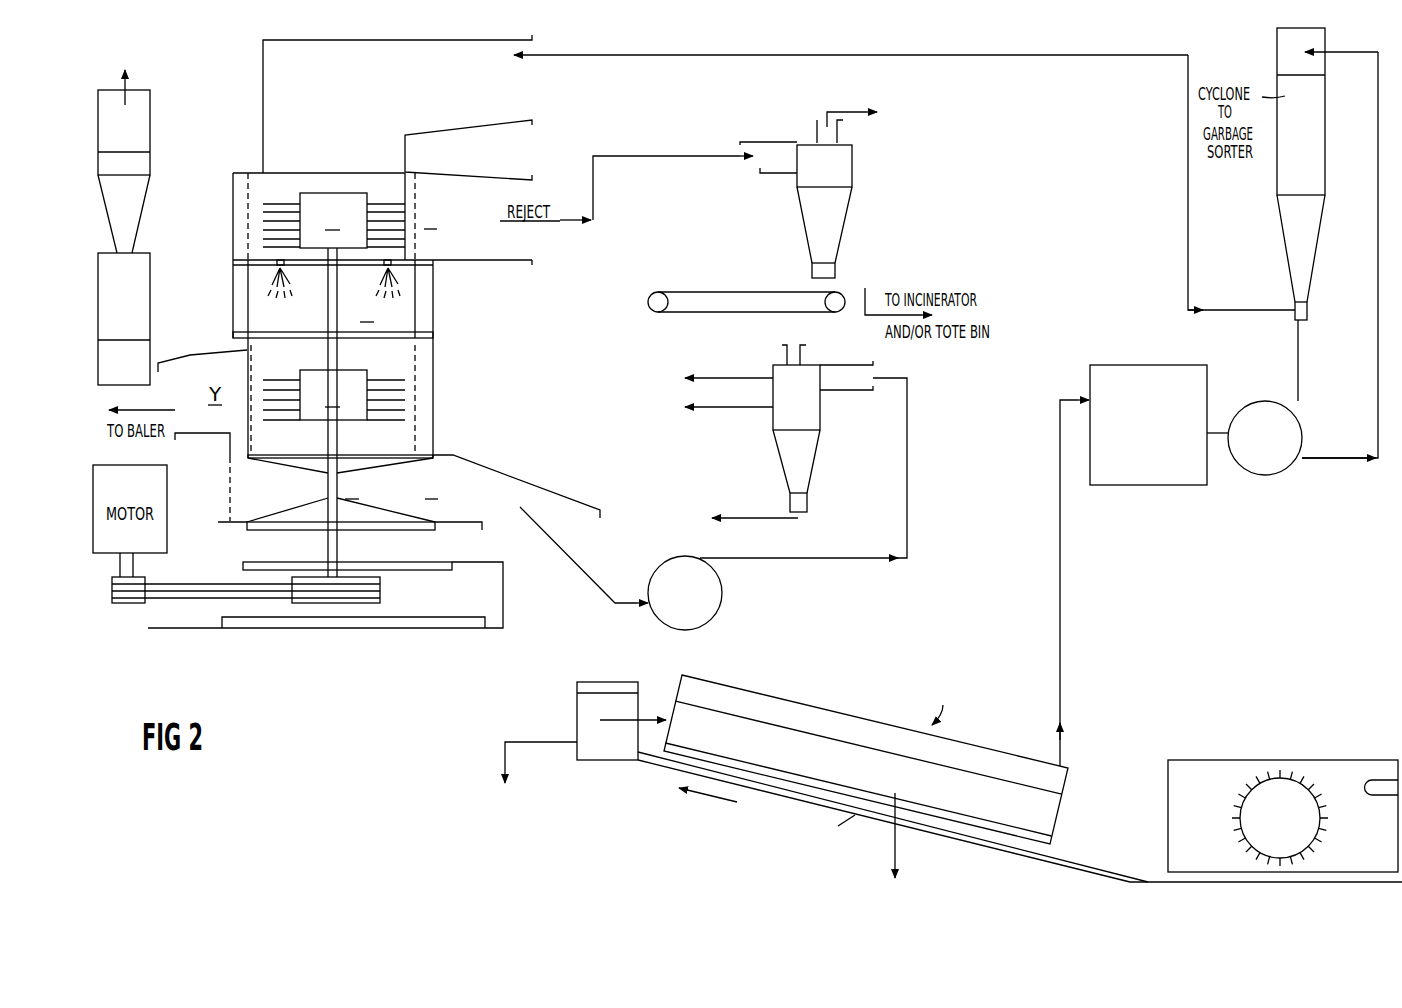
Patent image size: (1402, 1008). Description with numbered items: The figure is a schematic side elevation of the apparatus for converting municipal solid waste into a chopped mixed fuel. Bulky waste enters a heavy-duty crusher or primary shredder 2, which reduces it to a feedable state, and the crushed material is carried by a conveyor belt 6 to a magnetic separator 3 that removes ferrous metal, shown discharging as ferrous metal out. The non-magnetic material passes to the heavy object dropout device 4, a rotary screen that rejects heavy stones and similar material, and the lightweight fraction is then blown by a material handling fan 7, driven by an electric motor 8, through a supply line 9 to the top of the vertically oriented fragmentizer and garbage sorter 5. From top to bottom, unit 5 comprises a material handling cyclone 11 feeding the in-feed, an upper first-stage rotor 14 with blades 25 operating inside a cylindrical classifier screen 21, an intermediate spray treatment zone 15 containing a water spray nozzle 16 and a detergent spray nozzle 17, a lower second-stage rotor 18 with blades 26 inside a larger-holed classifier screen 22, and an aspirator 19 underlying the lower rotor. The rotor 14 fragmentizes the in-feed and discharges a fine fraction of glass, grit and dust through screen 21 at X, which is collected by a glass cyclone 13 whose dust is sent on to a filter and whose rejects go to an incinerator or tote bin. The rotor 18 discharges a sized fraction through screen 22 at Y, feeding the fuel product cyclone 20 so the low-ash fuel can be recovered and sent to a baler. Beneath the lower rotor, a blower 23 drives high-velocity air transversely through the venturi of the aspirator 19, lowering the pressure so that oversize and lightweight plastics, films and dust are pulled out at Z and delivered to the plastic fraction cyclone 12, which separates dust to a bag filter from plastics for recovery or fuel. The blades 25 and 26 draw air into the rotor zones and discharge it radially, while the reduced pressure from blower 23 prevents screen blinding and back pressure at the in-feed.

The primary shredder 2 is at (1287, 829).
The magnetic separator 3 is at (610, 746).
The heavy object dropout device 4 is at (1066, 796).
The fragmentizer and garbage sorter 5 is at (374, 374).
The conveyor belt 6 is at (1107, 870).
The material handling fan 7 is at (1154, 449).
The electric motor 8 is at (1270, 431).
The supply line 9 is at (1062, 578).
The material handling cyclone 11 is at (475, 77).
The plastic fraction cyclone 12 is at (819, 467).
The glass cyclone 13 is at (853, 200).
The first-stage rotor 14 is at (387, 188).
The spray treatment zone 15 is at (405, 308).
The water spray nozzle 16 is at (277, 265).
The detergent spray nozzle 17 is at (398, 259).
The second-stage rotor 18 is at (400, 372).
The aspirator 19 is at (400, 455).
The fuel product cyclone 20 is at (153, 268).
The classifier screen 21 is at (417, 204).
The classifier screen 22 is at (416, 392).
The blower 23 is at (696, 604).
The blades 25 is at (290, 203).
The blades 26 is at (278, 380).